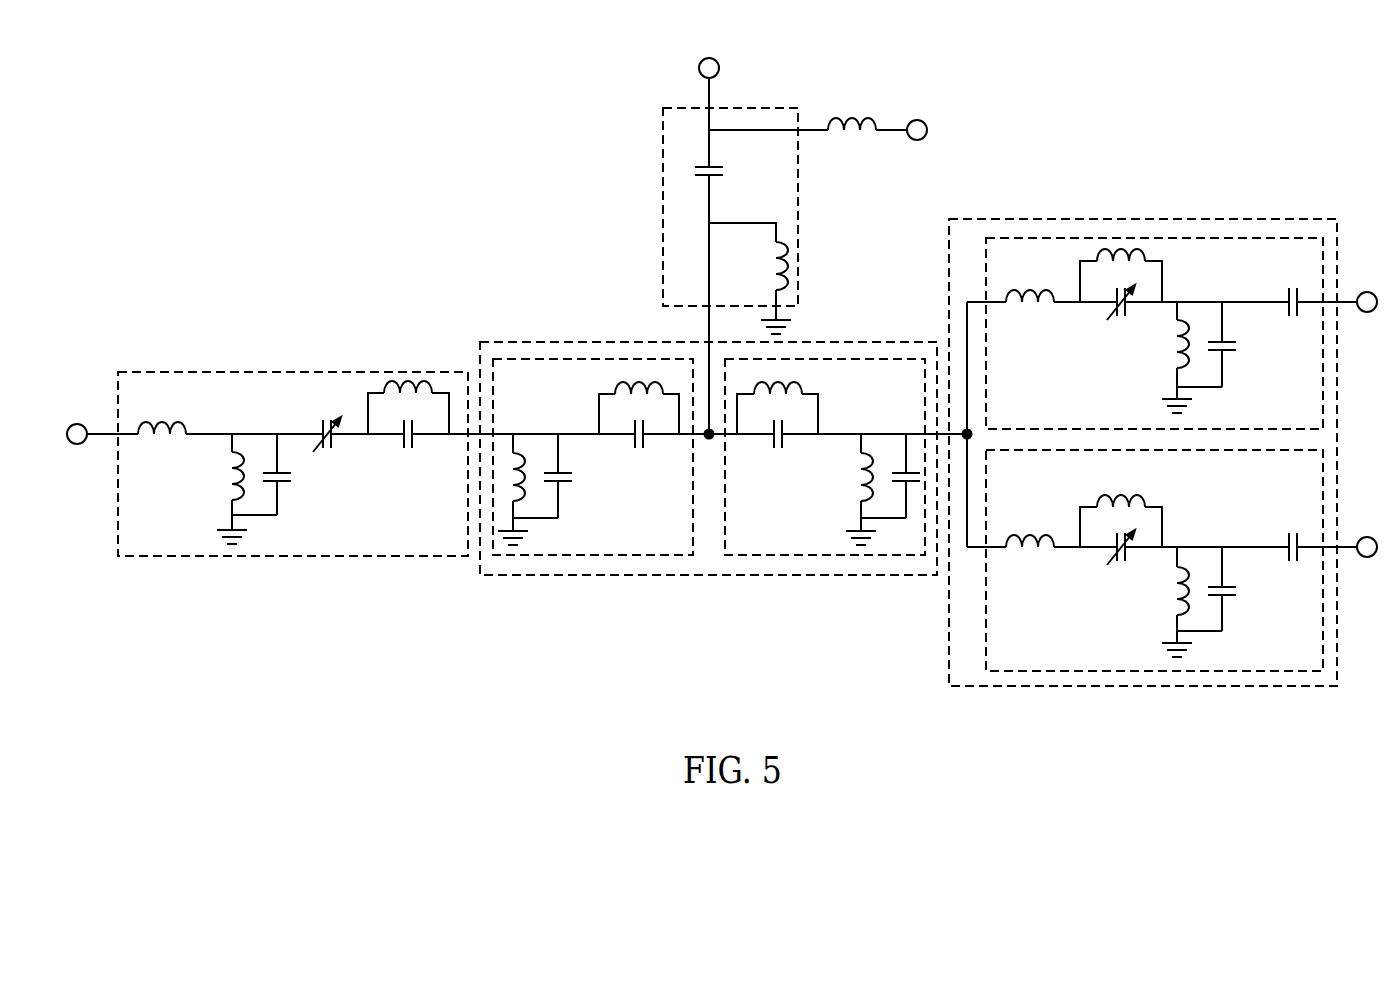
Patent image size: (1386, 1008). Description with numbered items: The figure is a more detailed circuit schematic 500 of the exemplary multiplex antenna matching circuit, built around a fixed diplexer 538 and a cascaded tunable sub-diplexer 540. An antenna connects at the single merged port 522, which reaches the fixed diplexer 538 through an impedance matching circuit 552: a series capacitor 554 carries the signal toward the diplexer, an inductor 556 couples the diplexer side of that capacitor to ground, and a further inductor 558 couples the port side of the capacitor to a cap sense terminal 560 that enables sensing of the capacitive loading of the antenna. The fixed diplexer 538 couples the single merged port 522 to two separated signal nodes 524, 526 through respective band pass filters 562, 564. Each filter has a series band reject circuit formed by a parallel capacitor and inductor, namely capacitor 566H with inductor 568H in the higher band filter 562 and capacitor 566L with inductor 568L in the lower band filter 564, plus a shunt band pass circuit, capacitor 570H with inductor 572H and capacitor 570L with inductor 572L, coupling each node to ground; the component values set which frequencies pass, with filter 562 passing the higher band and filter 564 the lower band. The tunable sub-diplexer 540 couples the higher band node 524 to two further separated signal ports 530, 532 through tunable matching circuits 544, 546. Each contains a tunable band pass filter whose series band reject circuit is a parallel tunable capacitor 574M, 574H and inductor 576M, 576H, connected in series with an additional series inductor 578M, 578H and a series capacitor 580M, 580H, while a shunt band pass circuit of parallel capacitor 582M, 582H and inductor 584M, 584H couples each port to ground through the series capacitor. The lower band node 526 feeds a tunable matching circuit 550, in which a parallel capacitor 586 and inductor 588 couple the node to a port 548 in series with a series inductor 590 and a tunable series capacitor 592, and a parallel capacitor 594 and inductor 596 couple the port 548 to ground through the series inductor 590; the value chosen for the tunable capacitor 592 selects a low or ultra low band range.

The circuit schematic 500 is at (722, 398).
The single merged port 522 is at (719, 66).
The separated signal node 524 is at (968, 375).
The separated signal node 526 is at (503, 430).
The further separated signal port 530 is at (1367, 292).
The further separated signal port 532 is at (1367, 537).
The fixed diplexer 538 is at (707, 575).
The tunable sub-diplexer 540 is at (1140, 686).
The tunable matching circuit 544 is at (1230, 237).
The tunable matching circuit 546 is at (1232, 671).
The port 548 is at (78, 444).
The tunable matching circuit 550 is at (290, 556).
The impedance matching circuit 552 is at (798, 205).
The series capacitor 554 is at (716, 166).
The inductor 556 is at (790, 265).
The further inductor 558 is at (850, 116).
The cap sense terminal 560 is at (927, 130).
The band pass filter 562 is at (828, 555).
The band pass filter 564 is at (588, 555).
The capacitor 566L is at (645, 440).
The capacitor 566H is at (785, 440).
The inductor 568L is at (638, 378).
The inductor 568H is at (790, 378).
The capacitor 570L is at (566, 480).
The capacitor 570H is at (903, 470).
The inductor 572L is at (518, 460).
The inductor 572H is at (859, 482).
The tunable capacitor 574M is at (1127, 317).
The tunable capacitor 574H is at (1112, 557).
The inductor 576M is at (1122, 247).
The inductor 576H is at (1105, 493).
The series inductor 578M is at (1021, 304).
The series inductor 578H is at (1021, 549).
The series capacitor 580M is at (1288, 310).
The series capacitor 580H is at (1288, 540).
The capacitor 582M is at (1235, 350).
The capacitor 582H is at (1236, 597).
The inductor 584M is at (1183, 325).
The inductor 584H is at (1175, 582).
The capacitor 586 is at (414, 440).
The inductor 588 is at (410, 378).
The series inductor 590 is at (155, 437).
The tunable series capacitor 592 is at (335, 449).
The capacitor 594 is at (287, 480).
The inductor 596 is at (230, 483).